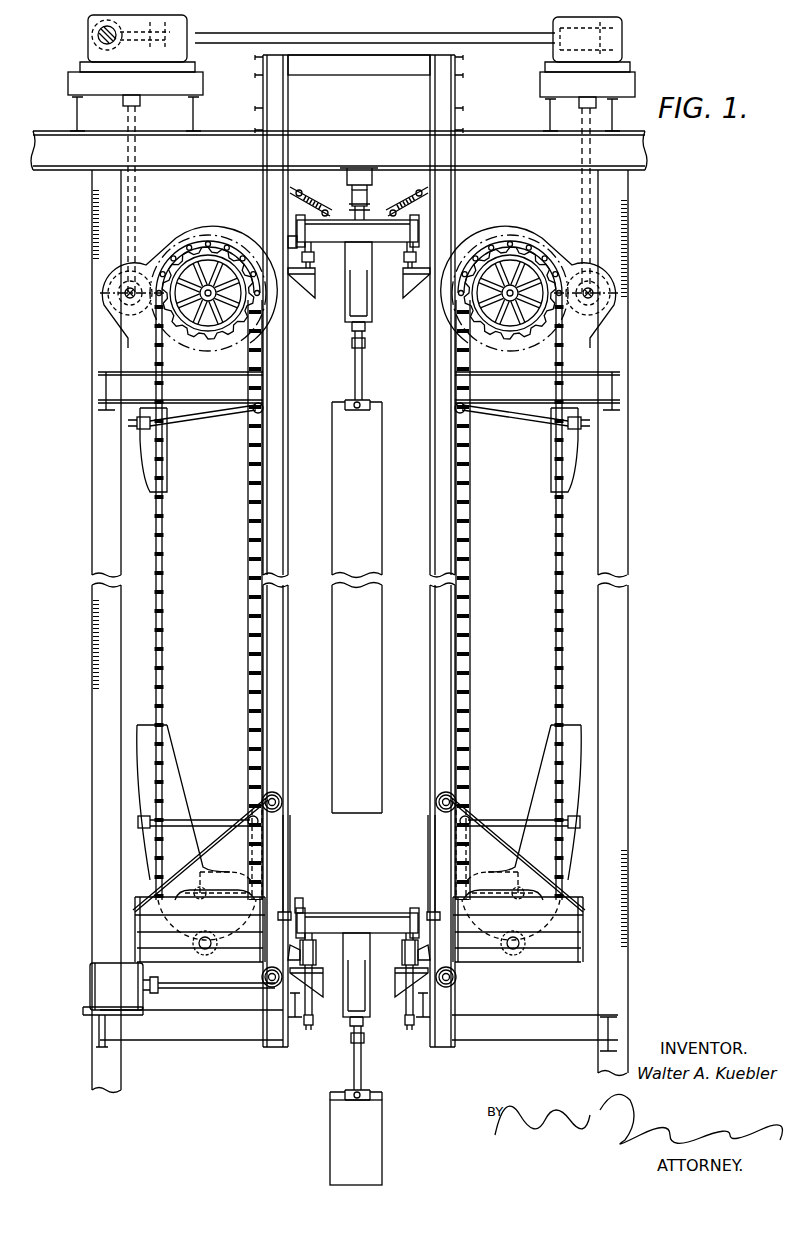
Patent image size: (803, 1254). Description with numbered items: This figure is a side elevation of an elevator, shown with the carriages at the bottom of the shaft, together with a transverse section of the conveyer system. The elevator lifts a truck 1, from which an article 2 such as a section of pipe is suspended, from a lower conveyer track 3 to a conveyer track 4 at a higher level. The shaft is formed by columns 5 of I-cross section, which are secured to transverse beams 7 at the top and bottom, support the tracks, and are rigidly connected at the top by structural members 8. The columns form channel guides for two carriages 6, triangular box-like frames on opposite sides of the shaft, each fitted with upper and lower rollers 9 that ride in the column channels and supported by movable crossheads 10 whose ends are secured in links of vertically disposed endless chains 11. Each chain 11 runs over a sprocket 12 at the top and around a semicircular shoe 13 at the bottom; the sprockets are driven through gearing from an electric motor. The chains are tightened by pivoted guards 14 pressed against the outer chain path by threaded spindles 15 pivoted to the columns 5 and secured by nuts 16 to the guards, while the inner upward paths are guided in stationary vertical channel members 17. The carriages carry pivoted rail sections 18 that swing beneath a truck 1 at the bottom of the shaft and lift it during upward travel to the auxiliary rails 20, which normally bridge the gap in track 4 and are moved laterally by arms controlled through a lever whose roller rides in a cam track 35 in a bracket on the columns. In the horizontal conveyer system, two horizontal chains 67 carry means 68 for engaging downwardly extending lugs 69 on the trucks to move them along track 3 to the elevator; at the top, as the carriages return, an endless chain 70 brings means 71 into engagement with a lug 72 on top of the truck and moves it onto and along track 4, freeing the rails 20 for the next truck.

The truck 1 is at (352, 232).
The article 2 is at (383, 456).
The conveyer track 3 is at (412, 970).
The conveyer track 4 is at (372, 259).
The columns 5 is at (289, 523).
The carriages 6 is at (272, 866).
The transverse beams 7 is at (262, 119).
The structural members 8 is at (375, 78).
The rollers 9 is at (283, 795).
The crossheads 10 is at (204, 952).
The endless chains 11 is at (164, 645).
The sprocket 12 is at (222, 340).
The semicircular shoe 13 is at (240, 905).
The guards 14 is at (142, 487).
The threaded spindles 15 is at (216, 427).
The nuts 16 is at (136, 426).
The channel members 17 is at (249, 540).
The rail sections 18 is at (302, 912).
The auxiliary rails 20 is at (292, 243).
The cam track 35 is at (410, 197).
The horizontal chains 67 is at (396, 945).
The means for engaging lugs 68 is at (316, 947).
The lugs 69 is at (314, 247).
The endless chain 70 is at (367, 208).
The means for engaging lug 71 is at (346, 216).
The lug 72 is at (318, 199).